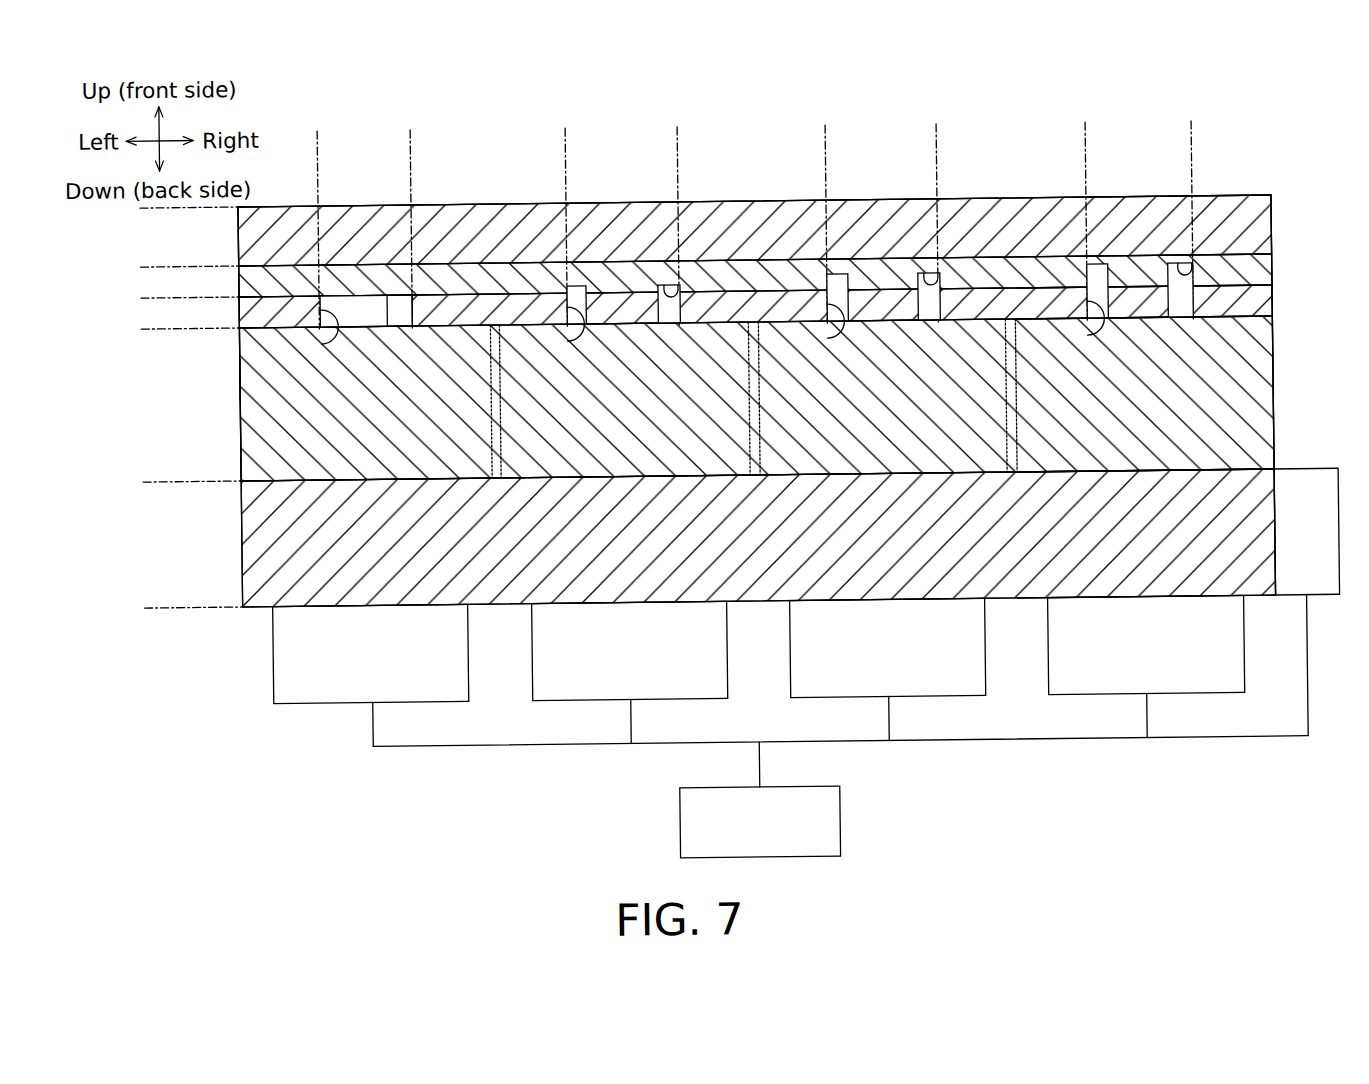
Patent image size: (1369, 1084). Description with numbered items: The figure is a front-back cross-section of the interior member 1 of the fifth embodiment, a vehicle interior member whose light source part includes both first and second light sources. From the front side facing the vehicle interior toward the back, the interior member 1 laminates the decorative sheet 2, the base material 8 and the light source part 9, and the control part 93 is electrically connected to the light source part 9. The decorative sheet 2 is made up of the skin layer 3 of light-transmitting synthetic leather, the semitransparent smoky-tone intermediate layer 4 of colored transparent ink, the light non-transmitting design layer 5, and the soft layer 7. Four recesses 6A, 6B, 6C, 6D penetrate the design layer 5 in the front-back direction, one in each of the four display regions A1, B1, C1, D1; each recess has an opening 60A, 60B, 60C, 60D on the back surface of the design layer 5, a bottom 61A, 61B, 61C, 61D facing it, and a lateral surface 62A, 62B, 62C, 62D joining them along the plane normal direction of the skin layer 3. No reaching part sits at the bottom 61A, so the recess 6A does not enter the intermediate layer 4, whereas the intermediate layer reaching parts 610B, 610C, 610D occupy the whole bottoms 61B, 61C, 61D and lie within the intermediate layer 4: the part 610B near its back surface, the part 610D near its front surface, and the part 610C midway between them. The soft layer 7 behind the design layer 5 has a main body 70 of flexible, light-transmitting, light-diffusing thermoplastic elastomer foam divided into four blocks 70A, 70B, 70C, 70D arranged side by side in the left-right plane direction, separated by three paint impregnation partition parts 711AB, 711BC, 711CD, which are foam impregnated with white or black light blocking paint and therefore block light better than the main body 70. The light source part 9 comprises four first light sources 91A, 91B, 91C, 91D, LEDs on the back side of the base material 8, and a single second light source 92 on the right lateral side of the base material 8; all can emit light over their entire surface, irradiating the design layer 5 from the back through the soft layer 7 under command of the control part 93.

The interior member 1 is at (1209, 114).
The decorative sheet 2 is at (148, 481).
The skin layer 3 is at (185, 207).
The intermediate layer 4 is at (185, 297).
The design layer 5 is at (185, 328).
The soft layer 7 is at (185, 481).
The base material 8 is at (148, 607).
The light source part 9 is at (240, 712).
The recess 6A is at (362, 297).
The recess 6B is at (576, 292).
The recess 6C is at (837, 288).
The recess 6D is at (1096, 282).
The opening 60A is at (378, 340).
The opening 60B is at (663, 332).
The opening 60C is at (925, 332).
The opening 60D is at (1180, 332).
The bottom 61A is at (386, 325).
The bottom 61B is at (669, 290).
The bottom 61C is at (929, 281).
The bottom 61D is at (1184, 274).
The intermediate layer reaching part 610B is at (718, 224).
The intermediate layer reaching part 610C is at (978, 213).
The intermediate layer reaching part 610D is at (1231, 203).
The lateral surface 62A is at (335, 340).
The lateral surface 62B is at (580, 340).
The lateral surface 62C is at (840, 340).
The lateral surface 62D is at (1095, 340).
The main body 70 is at (240, 380).
The block 70A is at (278, 476).
The block 70B is at (540, 480).
The block 70C is at (800, 480).
The block 70D is at (1060, 480).
The paint impregnation partition part 711AB is at (494, 328).
The paint impregnation partition part 711BC is at (753, 328).
The paint impregnation partition part 711CD is at (1010, 328).
The first light source 91A is at (328, 700).
The first light source 91B is at (585, 700).
The first light source 91C is at (845, 700).
The first light source 91D is at (1102, 700).
The second light source 92 is at (1300, 481).
The control part 93 is at (835, 803).
The display region A1 is at (411, 147).
The display region B1 is at (678, 147).
The display region C1 is at (937, 147).
The display region D1 is at (1192, 147).